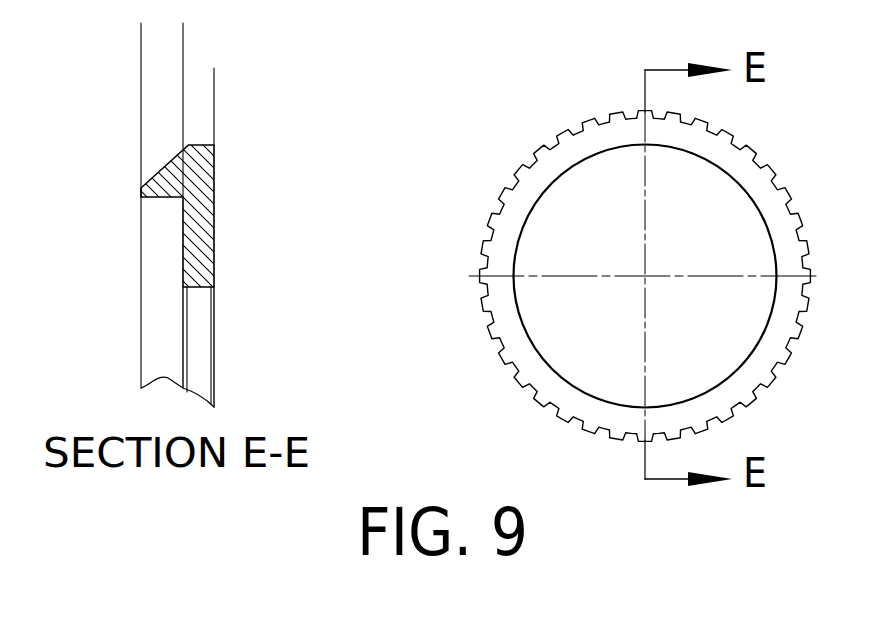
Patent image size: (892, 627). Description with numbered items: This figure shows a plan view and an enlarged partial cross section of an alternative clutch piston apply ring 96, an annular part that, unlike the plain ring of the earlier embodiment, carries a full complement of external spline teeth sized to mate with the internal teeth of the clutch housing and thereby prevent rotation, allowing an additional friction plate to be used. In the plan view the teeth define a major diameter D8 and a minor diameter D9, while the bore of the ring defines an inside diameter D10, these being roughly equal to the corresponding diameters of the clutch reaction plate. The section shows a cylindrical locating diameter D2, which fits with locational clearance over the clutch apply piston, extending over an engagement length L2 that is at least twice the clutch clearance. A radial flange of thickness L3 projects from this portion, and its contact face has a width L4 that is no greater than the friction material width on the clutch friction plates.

The piston apply ring 96 is at (518, 382).
The locating diameter D2 is at (141, 197).
The major diameter of spline teeth D8 is at (728, 419).
The minor diameter of spline teeth D9 is at (788, 344).
The inside diameter D10 is at (759, 210).
The length of locating diameter L2 is at (227, 38).
The thickness of flange L3 is at (140, 84).
The width of flange contact surface L4 is at (218, 145).